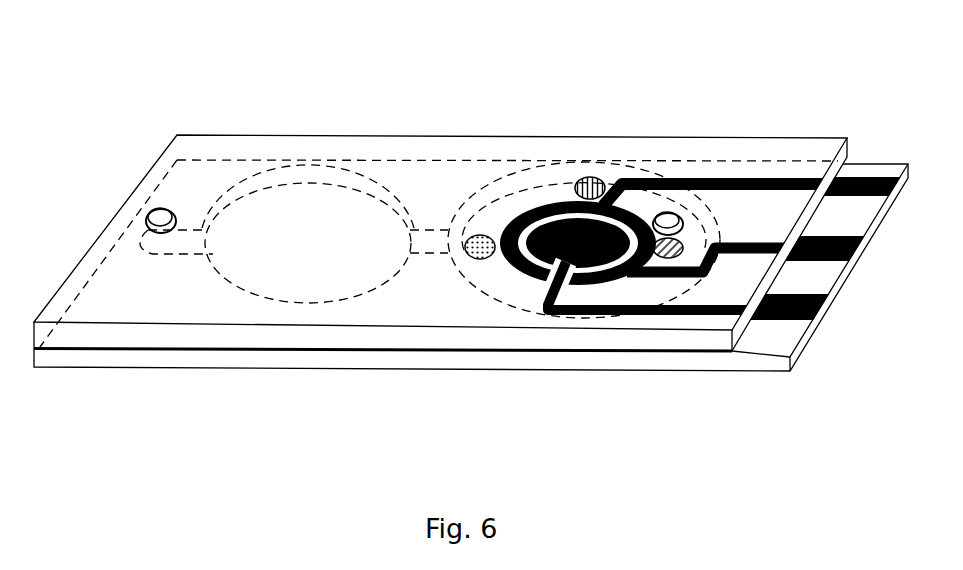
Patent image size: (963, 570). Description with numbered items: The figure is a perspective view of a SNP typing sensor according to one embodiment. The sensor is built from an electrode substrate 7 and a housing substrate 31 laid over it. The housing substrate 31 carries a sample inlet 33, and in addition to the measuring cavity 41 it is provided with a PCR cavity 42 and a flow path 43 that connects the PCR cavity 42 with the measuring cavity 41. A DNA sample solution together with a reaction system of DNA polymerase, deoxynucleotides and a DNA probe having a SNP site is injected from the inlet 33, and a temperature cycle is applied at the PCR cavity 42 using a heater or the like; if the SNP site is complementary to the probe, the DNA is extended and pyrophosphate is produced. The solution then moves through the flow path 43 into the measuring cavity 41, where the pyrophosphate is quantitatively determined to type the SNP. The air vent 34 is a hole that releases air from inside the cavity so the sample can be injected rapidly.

The electrode substrate 7 is at (678, 371).
The housing substrate 31 is at (218, 138).
The sample inlet 33 is at (160, 207).
The PCR cavity 42 is at (280, 208).
The flow path 43 is at (437, 228).
The measuring cavity 41 is at (543, 192).
The air vent 34 is at (672, 225).